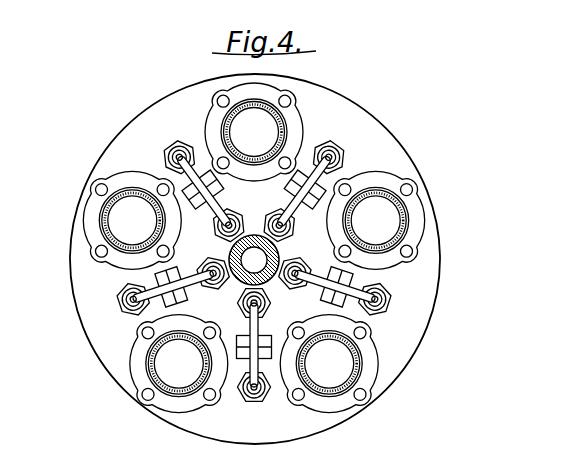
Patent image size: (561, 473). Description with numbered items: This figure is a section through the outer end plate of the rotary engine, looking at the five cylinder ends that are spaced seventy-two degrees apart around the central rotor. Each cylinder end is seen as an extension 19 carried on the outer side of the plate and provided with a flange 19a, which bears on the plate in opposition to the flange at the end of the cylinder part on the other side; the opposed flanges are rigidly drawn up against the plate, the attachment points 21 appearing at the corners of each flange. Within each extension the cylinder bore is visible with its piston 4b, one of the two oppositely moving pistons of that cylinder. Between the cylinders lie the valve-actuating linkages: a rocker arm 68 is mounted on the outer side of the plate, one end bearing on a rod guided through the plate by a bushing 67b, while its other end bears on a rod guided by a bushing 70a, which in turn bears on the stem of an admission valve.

The flange 19a is at (211, 117).
The bolt holes 21 is at (290, 96).
The extension 19 is at (287, 121).
The piston 4b is at (304, 122).
The bushing 67b is at (239, 303).
The rocker arm 68 is at (258, 330).
The bushing 70a is at (256, 398).